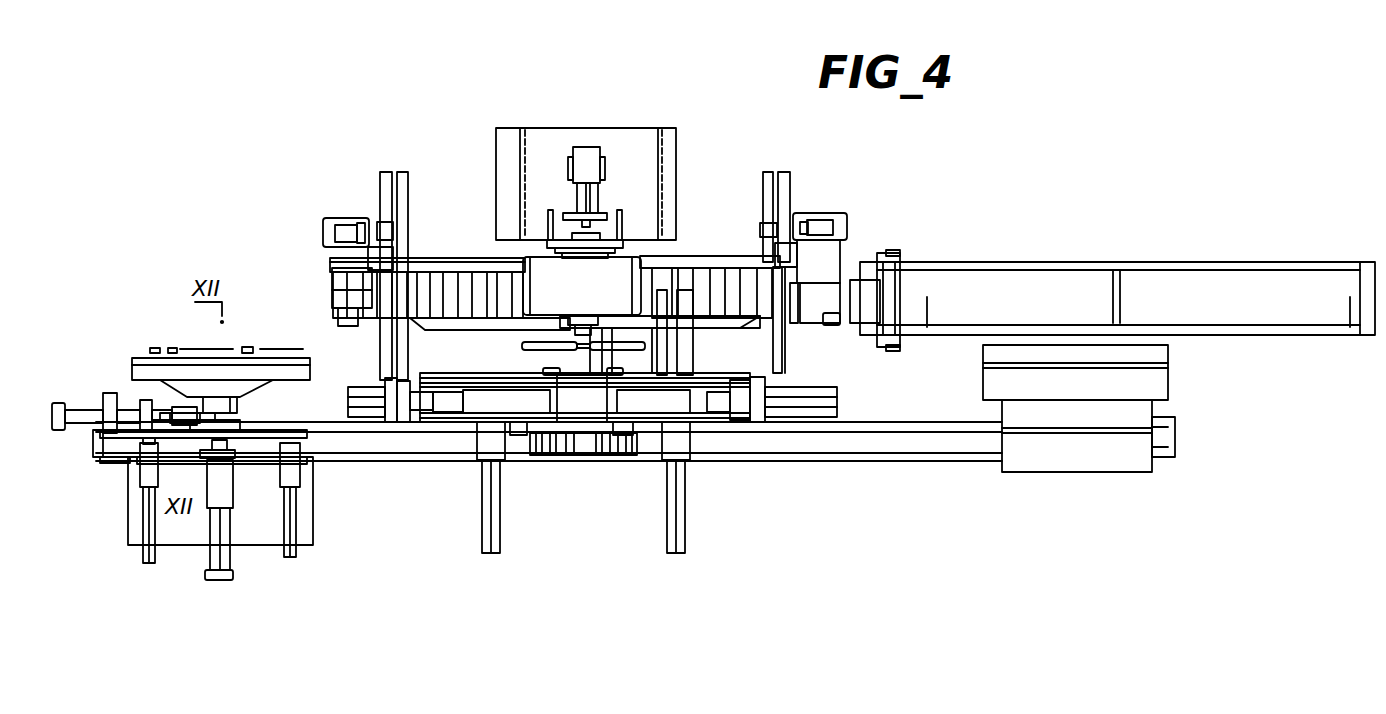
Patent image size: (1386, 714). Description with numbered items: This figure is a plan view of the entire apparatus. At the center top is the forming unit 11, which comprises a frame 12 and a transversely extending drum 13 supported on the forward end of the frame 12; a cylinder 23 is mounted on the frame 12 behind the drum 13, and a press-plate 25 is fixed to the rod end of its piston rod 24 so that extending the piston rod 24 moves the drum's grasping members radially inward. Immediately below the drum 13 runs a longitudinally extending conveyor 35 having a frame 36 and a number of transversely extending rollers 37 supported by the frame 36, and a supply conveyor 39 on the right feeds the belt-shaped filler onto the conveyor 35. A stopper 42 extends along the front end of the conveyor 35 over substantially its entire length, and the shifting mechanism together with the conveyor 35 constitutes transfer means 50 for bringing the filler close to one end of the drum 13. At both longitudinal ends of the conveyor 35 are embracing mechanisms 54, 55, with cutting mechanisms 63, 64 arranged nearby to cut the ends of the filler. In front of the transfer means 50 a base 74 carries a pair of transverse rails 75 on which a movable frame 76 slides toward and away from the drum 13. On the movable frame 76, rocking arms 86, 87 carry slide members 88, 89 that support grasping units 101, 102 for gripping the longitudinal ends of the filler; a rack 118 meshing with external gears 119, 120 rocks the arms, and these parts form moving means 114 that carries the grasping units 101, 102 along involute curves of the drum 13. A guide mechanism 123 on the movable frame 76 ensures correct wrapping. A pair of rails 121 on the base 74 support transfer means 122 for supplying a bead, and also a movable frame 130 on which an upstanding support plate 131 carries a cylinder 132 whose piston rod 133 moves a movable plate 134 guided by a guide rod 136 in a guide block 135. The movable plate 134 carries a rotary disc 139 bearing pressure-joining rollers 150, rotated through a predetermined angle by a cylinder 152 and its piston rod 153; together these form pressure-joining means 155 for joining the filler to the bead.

The forming unit 11 is at (678, 158).
The frame 12 is at (640, 130).
The drum 13 is at (646, 264).
The cylinder 23 is at (590, 148).
The piston rod 24 is at (592, 200).
The press-plate 25 is at (572, 212).
The conveyor 35 is at (728, 263).
The frame 36 is at (703, 264).
The rollers 37 is at (452, 280).
The supply conveyor 39 is at (1028, 262).
The stopper 42 is at (706, 328).
The transfer means 50 is at (712, 208).
The embracing mechanism 54 is at (408, 218).
The embracing mechanism 55 is at (760, 222).
The cutting mechanism 63 is at (370, 212).
The cutting mechanism 64 is at (805, 213).
The base 74 is at (798, 461).
The rails 75 is at (500, 542).
The movable frame 76 is at (468, 378).
The rocking arm 86 is at (362, 388).
The rocking arm 87 is at (810, 388).
The slide member 88 is at (400, 415).
The slide member 89 is at (784, 420).
The grasping unit 101 is at (384, 343).
The grasping unit 102 is at (782, 365).
The moving means 114 is at (565, 460).
The rack 118 is at (585, 460).
The external gear 119 is at (548, 460).
The external gear 120 is at (625, 460).
The rails 121 is at (928, 442).
The transfer means 122 is at (1088, 472).
The guide mechanism 123 is at (545, 342).
The movable frame 130 is at (306, 512).
The support plate 131 is at (250, 464).
The cylinder 132 is at (220, 580).
The piston rod 133 is at (230, 442).
The movable plate 134 is at (100, 440).
The guide block 135 is at (140, 482).
The guide rod 136 is at (148, 562).
The rotary disc 139 is at (258, 384).
The pressure-joining roller 150 is at (173, 345).
The cylinder 152 is at (82, 404).
The piston rod 153 is at (158, 410).
The pressure-joining means 155 is at (322, 556).